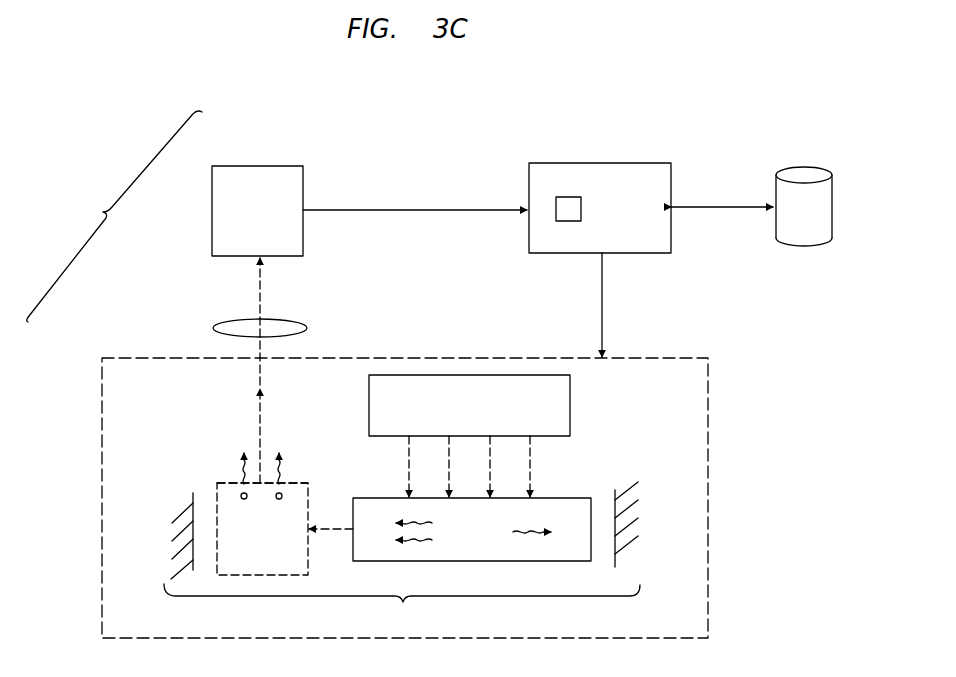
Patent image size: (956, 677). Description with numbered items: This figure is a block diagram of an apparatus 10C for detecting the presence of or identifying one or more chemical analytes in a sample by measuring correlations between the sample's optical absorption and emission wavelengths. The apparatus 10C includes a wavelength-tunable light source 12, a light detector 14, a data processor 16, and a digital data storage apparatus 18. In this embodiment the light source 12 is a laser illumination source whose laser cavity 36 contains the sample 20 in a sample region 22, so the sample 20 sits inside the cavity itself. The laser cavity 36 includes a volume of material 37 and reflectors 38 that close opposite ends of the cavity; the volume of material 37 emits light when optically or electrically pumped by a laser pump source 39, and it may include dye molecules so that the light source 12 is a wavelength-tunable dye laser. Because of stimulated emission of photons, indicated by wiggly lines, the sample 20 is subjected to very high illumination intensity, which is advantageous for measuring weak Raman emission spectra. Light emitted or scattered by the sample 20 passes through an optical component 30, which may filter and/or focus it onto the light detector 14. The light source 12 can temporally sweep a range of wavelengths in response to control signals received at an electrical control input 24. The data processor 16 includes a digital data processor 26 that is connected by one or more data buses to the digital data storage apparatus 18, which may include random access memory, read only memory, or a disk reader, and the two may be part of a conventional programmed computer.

The apparatus 10C is at (114, 216).
The light detector 14 is at (267, 224).
The data processor 16 is at (649, 236).
The digital data processor 26 is at (582, 199).
The digital data storage apparatus 18 is at (813, 222).
The electrical control input 24 is at (603, 313).
The wavelength-tunable light source 12 is at (706, 362).
The optical component 30 is at (305, 323).
The laser pump source 39 is at (481, 418).
The volume of material 37 is at (482, 543).
The sample 20 is at (247, 560).
The sample region 22 is at (228, 483).
The reflectors 38 is at (173, 575).
The laser cavity 36 is at (402, 608).